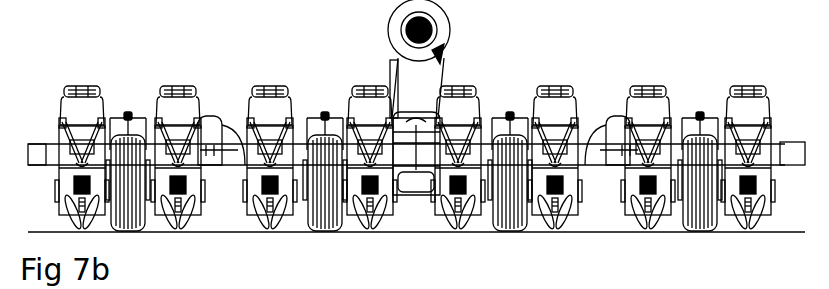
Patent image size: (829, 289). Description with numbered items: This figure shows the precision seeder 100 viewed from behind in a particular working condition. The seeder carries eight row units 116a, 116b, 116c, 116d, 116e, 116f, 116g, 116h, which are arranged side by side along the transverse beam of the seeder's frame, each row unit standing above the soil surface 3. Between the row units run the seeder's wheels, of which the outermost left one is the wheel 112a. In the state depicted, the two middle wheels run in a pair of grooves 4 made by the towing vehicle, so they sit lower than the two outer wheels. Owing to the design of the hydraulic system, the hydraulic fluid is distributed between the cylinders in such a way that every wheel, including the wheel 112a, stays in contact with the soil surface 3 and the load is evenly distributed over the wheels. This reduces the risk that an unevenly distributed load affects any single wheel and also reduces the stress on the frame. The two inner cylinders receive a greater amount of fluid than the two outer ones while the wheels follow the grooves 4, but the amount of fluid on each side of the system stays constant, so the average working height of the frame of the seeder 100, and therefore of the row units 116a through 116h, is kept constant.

The soil surface 3 is at (37, 215).
The precision seeder 100 is at (248, 55).
The wheel 112a is at (120, 118).
The grooves 4 is at (330, 234).
The row unit 116a is at (88, 232).
The row unit 116b is at (184, 232).
The row unit 116c is at (274, 232).
The row unit 116d is at (376, 232).
The row unit 116e is at (462, 232).
The row unit 116f is at (560, 232).
The row unit 116g is at (654, 232).
The row unit 116h is at (752, 232).